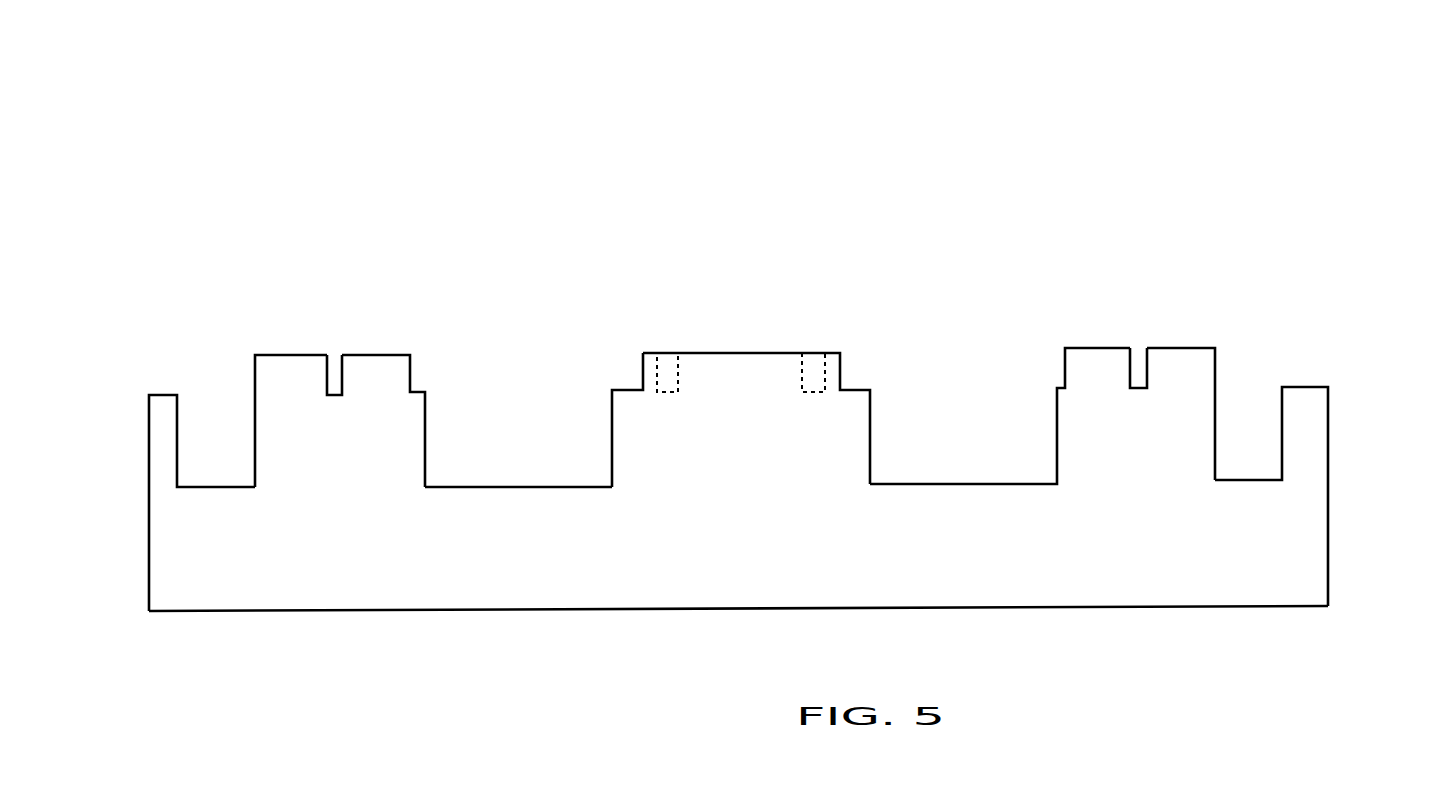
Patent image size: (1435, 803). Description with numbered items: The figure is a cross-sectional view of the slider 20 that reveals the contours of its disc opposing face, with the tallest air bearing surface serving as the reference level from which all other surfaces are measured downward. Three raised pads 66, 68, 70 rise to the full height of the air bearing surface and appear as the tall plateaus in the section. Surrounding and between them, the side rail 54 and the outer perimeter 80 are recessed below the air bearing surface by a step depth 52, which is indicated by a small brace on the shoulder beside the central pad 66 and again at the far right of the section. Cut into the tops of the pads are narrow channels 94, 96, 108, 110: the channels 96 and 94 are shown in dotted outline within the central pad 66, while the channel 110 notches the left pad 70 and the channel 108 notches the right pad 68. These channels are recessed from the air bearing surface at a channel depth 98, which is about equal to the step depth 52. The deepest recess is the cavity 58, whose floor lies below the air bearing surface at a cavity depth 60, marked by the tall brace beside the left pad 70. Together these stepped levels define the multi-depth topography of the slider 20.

The slider 20 is at (262, 152).
The step depth 52 is at (878, 353).
The side rail 54 is at (166, 394).
The cavity 58 is at (522, 487).
The cavity depth 60 is at (435, 355).
The pad 66 is at (746, 363).
The pad 68 is at (1062, 375).
The pad 70 is at (350, 380).
The outer perimeter 80 is at (630, 388).
The channel 94 is at (813, 348).
The channel 96 is at (668, 352).
The channel depth 98 is at (1152, 348).
The channel 108 is at (1137, 370).
The channel 110 is at (333, 372).